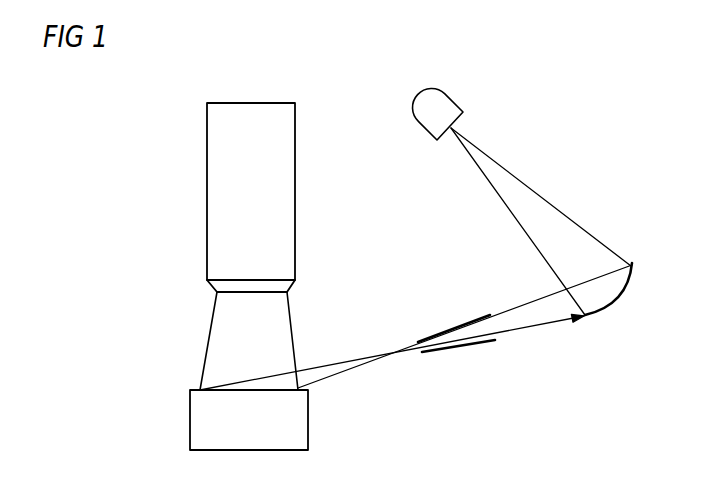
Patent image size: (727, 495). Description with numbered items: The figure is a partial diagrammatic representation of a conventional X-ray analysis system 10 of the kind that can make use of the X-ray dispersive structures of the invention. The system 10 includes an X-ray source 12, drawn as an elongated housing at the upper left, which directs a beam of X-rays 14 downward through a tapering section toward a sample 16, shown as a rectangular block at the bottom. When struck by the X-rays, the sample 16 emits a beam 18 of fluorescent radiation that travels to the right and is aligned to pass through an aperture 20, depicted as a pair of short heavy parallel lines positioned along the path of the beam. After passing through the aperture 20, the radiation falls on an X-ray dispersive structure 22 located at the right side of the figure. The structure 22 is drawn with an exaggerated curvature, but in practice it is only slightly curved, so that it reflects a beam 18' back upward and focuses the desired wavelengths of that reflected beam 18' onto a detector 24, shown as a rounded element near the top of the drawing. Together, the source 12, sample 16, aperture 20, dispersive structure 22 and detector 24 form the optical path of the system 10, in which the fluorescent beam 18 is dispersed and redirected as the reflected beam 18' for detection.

The X-ray analysis system 10 is at (494, 133).
The X-ray source 12 is at (263, 206).
The beam of X-rays 14 is at (280, 351).
The sample 16 is at (300, 438).
The beam of fluorescent radiation 18 is at (416, 344).
The reflected beam 18' is at (560, 197).
The aperture 20 is at (468, 344).
The X-ray dispersive structure 22 is at (619, 294).
The detector 24 is at (432, 119).